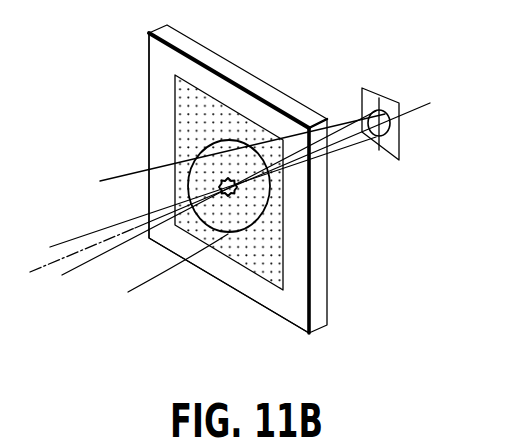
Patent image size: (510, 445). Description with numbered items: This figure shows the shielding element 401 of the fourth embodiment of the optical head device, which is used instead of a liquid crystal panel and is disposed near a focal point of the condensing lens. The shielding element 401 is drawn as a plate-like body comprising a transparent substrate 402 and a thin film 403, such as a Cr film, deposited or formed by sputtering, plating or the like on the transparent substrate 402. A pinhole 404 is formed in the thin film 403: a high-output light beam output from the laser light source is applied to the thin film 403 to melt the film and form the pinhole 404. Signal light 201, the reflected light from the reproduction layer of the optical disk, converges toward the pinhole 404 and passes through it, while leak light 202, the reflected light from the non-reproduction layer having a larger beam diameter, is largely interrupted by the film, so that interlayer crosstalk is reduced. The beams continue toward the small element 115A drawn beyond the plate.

The shielding element 401 is at (206, 284).
The transparent substrate 402 is at (298, 249).
The thin film 403 is at (263, 270).
The pinhole 404 is at (232, 189).
The signal light 201 is at (72, 240).
The leak light 202 is at (118, 177).
The photodetector 115A is at (368, 102).